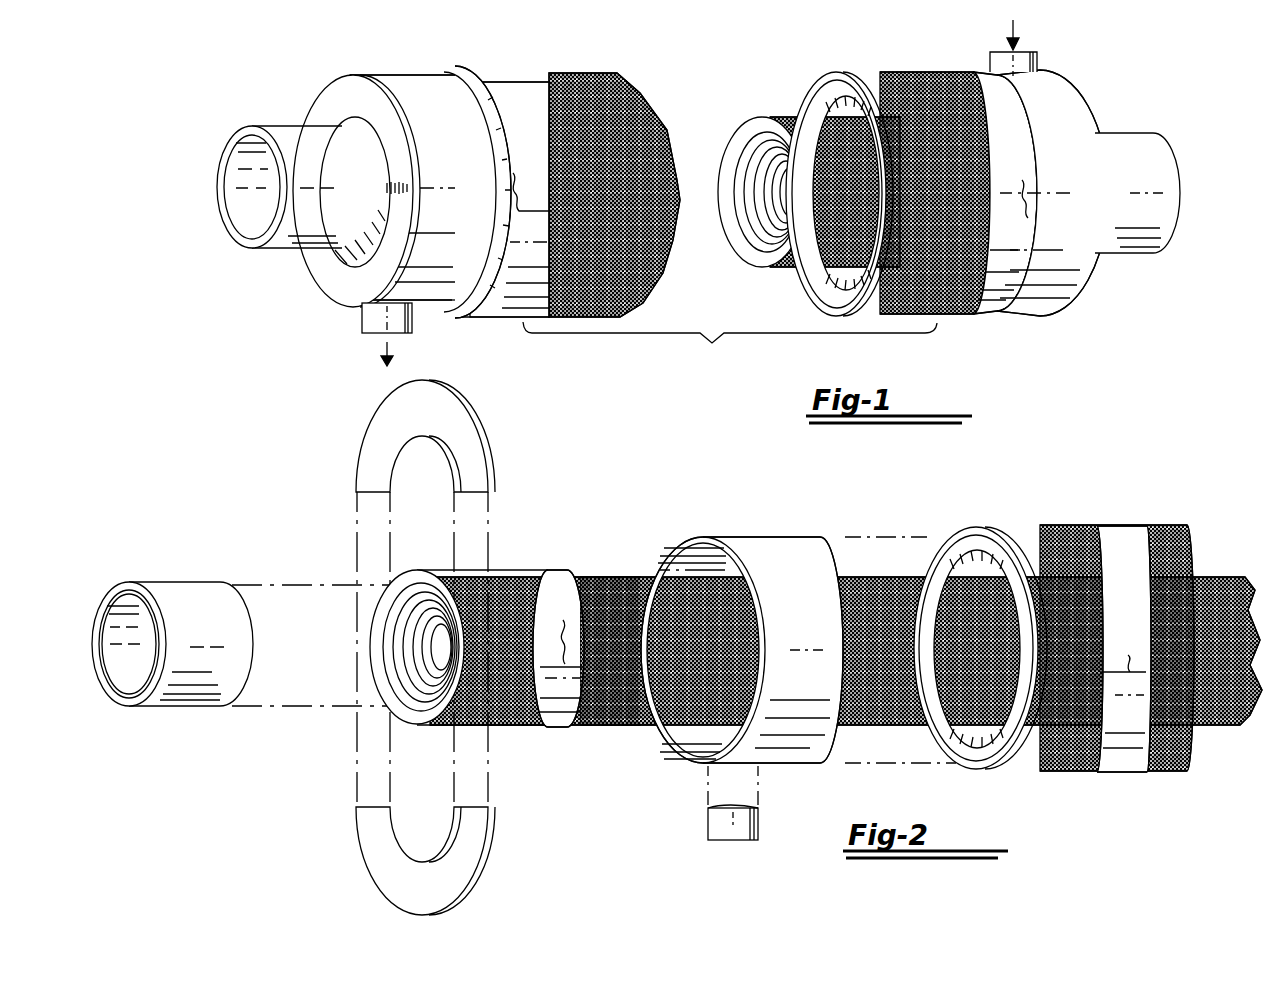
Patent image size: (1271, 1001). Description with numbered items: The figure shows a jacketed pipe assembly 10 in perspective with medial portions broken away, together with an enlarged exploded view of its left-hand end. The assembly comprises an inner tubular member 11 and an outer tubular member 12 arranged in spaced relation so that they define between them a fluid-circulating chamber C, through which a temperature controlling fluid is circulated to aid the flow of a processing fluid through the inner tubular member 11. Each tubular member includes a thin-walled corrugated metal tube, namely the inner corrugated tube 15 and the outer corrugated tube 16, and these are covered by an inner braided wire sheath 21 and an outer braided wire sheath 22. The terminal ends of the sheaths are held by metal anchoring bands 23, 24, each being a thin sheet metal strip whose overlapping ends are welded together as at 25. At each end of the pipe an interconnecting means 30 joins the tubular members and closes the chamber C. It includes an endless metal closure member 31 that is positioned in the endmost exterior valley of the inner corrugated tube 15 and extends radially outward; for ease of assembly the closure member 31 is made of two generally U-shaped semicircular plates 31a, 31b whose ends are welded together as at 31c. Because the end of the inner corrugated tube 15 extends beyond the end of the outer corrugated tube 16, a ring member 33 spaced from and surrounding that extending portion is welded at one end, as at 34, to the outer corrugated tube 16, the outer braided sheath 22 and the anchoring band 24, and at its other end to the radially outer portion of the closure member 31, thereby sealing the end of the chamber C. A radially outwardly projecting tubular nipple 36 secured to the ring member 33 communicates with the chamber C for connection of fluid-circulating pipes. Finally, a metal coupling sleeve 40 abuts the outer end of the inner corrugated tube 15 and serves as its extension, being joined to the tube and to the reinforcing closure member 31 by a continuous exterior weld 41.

In FIG. 1, the jacketed pipe assembly 10 is at (756, 211).
In FIG. 2, the jacketed pipe assembly 10 is at (787, 659).
In FIG. 1, the inner tubular member 11 is at (727, 131).
In FIG. 2, the inner tubular member 11 is at (616, 742).
In FIG. 1, the outer tubular member 12 is at (822, 172).
In FIG. 2, the outer tubular member 12 is at (976, 645).
In FIG. 1, the inner corrugated tube 15 is at (754, 240).
In FIG. 2, the inner corrugated tube 15 is at (378, 648).
In FIG. 1, the outer corrugated tube 16 is at (848, 88).
In FIG. 2, the outer corrugated tube 16 is at (952, 748).
In FIG. 1, the inner braided wire sheath 21 is at (792, 262).
In FIG. 2, the inner braided wire sheath 21 is at (882, 729).
In FIG. 1, the outer braided wire sheath 22 is at (540, 75).
In FIG. 2, the outer braided wire sheath 22 is at (1132, 536).
In FIG. 2, the anchoring band 23 is at (546, 576).
In FIG. 1, the anchoring band 24 is at (485, 308).
In FIG. 2, the anchoring band 24 is at (1124, 649).
In FIG. 1, the weld 25 is at (796, 181).
In FIG. 2, the weld 25 is at (849, 636).
In FIG. 1, the interconnecting means 30 is at (702, 193).
In FIG. 2, the interconnecting means 30 is at (711, 664).
In FIG. 1, the metal closure member 31 is at (351, 195).
In FIG. 2, the metal closure member 31 is at (454, 647).
In FIG. 1, the semicircular plate 31a is at (318, 264).
In FIG. 2, the semicircular plate 31a is at (466, 836).
In FIG. 1, the semicircular plate 31b is at (320, 104).
In FIG. 2, the semicircular plate 31b is at (452, 408).
In FIG. 1, the weld 31c is at (402, 182).
In FIG. 1, the ring member 33 is at (450, 127).
In FIG. 2, the ring member 33 is at (656, 570).
In FIG. 1, the weld 34 is at (437, 67).
In FIG. 1, the tubular nipple 36 is at (364, 322).
In FIG. 2, the tubular nipple 36 is at (708, 828).
In FIG. 1, the metal coupling sleeve 40 is at (228, 232).
In FIG. 2, the metal coupling sleeve 40 is at (203, 594).
In FIG. 1, the continuous exterior weld 41 is at (365, 138).
In FIG. 1, the fluid-circulating chamber C is at (796, 104).
In FIG. 2, the fluid-circulating chamber C is at (956, 560).